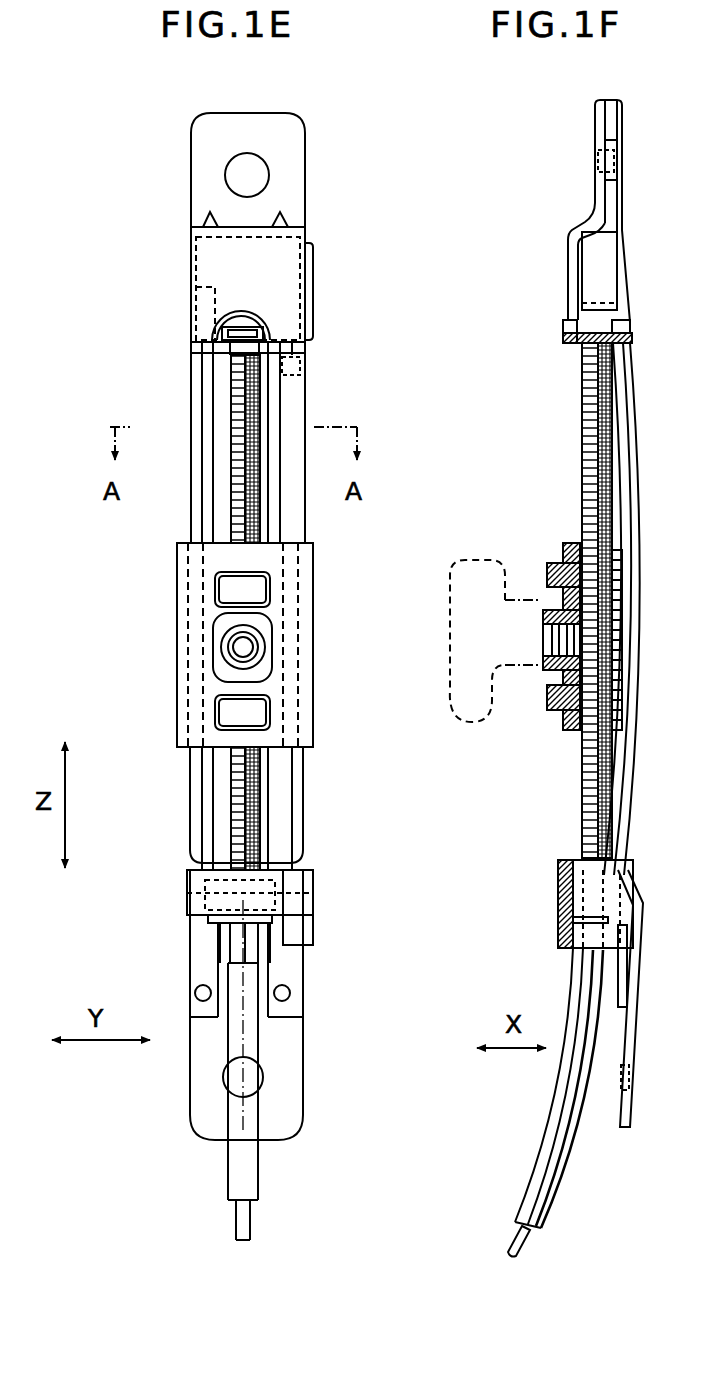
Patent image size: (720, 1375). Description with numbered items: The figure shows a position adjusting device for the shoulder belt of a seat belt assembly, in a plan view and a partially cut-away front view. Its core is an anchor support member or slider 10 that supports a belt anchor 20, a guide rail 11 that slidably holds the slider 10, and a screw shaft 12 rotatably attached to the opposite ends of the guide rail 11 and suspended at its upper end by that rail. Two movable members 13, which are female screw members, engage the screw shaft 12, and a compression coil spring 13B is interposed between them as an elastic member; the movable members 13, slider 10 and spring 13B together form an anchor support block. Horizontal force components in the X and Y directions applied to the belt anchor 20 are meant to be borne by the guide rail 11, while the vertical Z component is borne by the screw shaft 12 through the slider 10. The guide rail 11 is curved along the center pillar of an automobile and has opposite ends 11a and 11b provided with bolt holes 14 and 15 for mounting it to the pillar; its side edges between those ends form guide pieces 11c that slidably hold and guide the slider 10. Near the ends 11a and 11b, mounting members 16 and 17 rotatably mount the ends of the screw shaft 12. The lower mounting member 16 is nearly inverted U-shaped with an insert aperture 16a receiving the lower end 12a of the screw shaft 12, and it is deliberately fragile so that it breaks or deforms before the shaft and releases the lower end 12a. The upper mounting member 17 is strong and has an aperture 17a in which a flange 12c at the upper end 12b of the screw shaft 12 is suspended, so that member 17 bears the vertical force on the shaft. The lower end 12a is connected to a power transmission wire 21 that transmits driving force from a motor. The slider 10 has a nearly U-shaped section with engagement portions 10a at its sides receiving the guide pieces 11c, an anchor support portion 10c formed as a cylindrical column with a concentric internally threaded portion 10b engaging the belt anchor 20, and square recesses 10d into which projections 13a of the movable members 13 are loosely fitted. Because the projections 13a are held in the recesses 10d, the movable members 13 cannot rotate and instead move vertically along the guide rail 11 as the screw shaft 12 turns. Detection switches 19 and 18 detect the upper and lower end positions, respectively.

In FIG. 1E, the anchor support member (slider) 10 is at (232, 650).
In FIG. 1F, the anchor support member (slider) 10 is at (545, 682).
In FIG. 1E, the engagement portions 10a is at (308, 573).
In FIG. 1E, the internally threaded portion 10b is at (230, 660).
In FIG. 1F, the internally threaded portion 10b is at (545, 635).
In FIG. 1E, the anchor support portion 10c is at (280, 645).
In FIG. 1F, the anchor support portion 10c is at (565, 600).
In FIG. 1F, the square recesses 10d is at (572, 555).
In FIG. 1E, the guide rail 11 is at (308, 766).
In FIG. 1F, the guide rail 11 is at (640, 773).
In FIG. 1E, the upper end of guide rail 11a is at (305, 202).
In FIG. 1F, the upper end of guide rail 11a is at (627, 212).
In FIG. 1E, the lower end of guide rail 11b is at (305, 1040).
In FIG. 1F, the lower end of guide rail 11b is at (637, 1015).
In FIG. 1E, the guide pieces 11c is at (190, 810).
In FIG. 1E, the screw shaft 12 is at (262, 490).
In FIG. 1F, the screw shaft 12 is at (590, 420).
In FIG. 1E, the lower end of screw shaft 12a is at (215, 905).
In FIG. 1E, the upper end of screw shaft 12b is at (218, 333).
In FIG. 1F, the upper end of screw shaft 12b is at (565, 322).
In FIG. 1E, the flange 12c is at (272, 335).
In FIG. 1F, the flange 12c is at (625, 322).
In FIG. 1F, the movable members 13 is at (627, 570).
In FIG. 1E, the projection 13a is at (215, 588).
In FIG. 1F, the projection 13a is at (555, 565).
In FIG. 1F, the compression coil spring 13B is at (605, 622).
In FIG. 1E, the bolt hole 14 is at (262, 168).
In FIG. 1F, the bolt hole 14 is at (595, 160).
In FIG. 1E, the bolt hole 15 is at (263, 1077).
In FIG. 1F, the bolt hole 15 is at (632, 1078).
In FIG. 1E, the mounting member 16 is at (297, 965).
In FIG. 1F, the mounting member 16 is at (558, 916).
In FIG. 1E, the insert aperture 16a is at (305, 885).
In FIG. 1F, the insert aperture 16a is at (560, 882).
In FIG. 1E, the mounting member 17 is at (196, 292).
In FIG. 1F, the mounting member 17 is at (565, 252).
In FIG. 1E, the aperture 17a is at (290, 367).
In FIG. 1F, the aperture 17a is at (566, 337).
In FIG. 1E, the detection switch 18 is at (305, 930).
In FIG. 1F, the detection switch 18 is at (617, 938).
In FIG. 1E, the detection switch 19 is at (313, 286).
In FIG. 1F, the belt anchor 20 is at (450, 560).
In FIG. 1E, the power transmission wire 21 is at (238, 1225).
In FIG. 1F, the power transmission wire 21 is at (512, 1240).